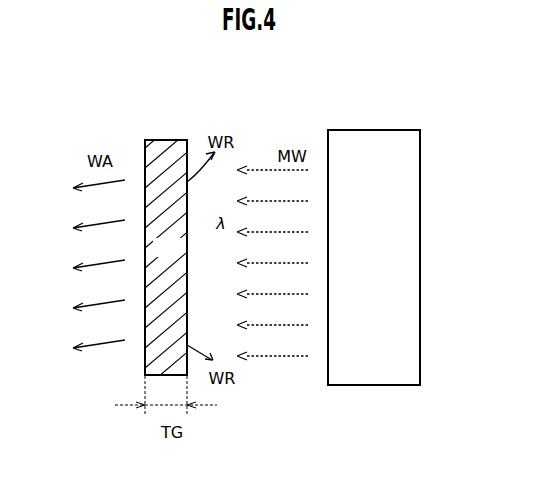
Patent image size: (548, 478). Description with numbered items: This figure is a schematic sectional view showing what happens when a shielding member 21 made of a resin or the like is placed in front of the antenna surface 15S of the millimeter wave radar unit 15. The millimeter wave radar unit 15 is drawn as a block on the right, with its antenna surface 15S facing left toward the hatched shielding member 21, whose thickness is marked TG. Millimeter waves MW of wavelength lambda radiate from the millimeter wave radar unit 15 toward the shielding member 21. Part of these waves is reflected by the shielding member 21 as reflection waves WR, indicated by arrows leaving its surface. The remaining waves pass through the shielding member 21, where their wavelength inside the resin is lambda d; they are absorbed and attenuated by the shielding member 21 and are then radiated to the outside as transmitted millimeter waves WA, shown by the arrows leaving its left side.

The shielding member 21 is at (167, 140).
The millimeter wave radar unit 15 is at (369, 130).
The antenna surface 15S is at (328, 374).